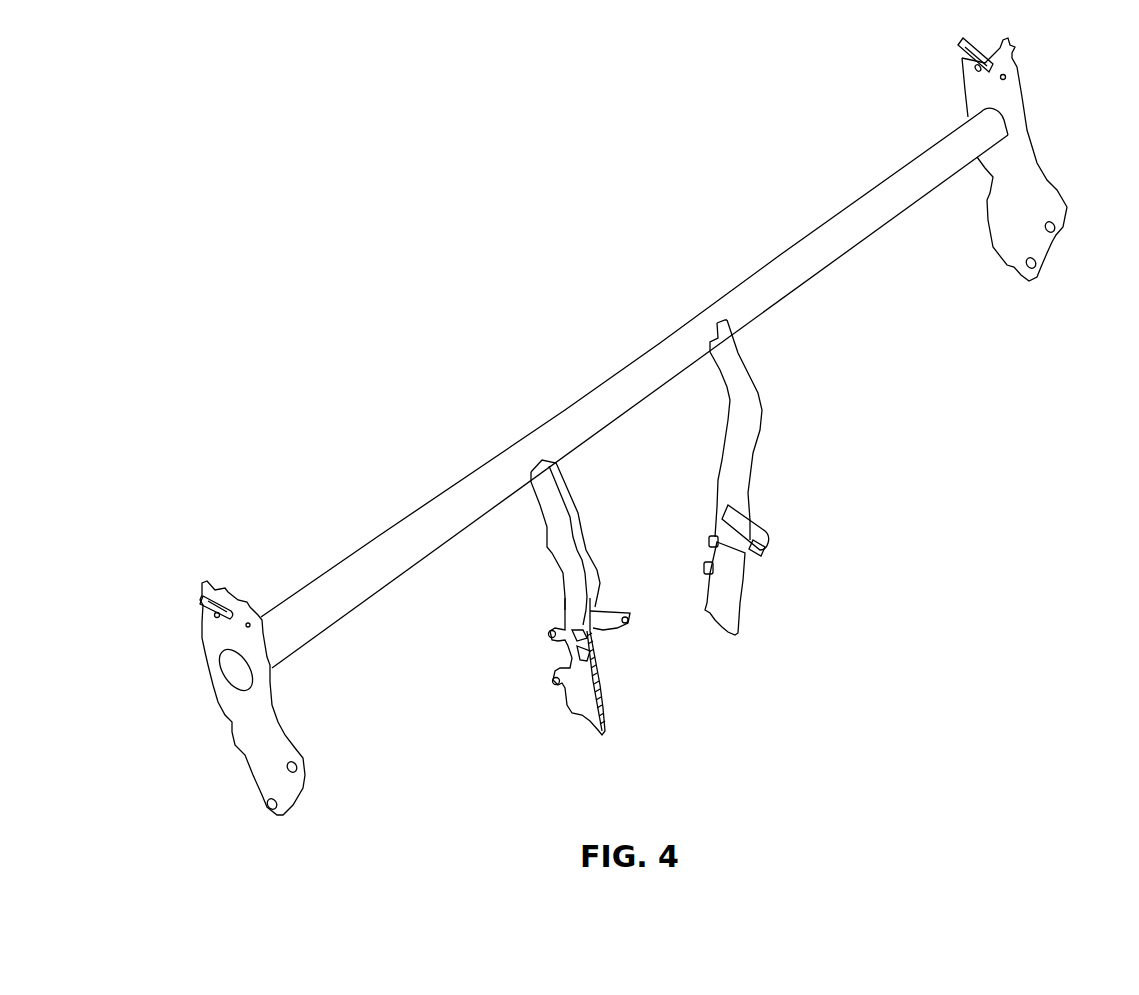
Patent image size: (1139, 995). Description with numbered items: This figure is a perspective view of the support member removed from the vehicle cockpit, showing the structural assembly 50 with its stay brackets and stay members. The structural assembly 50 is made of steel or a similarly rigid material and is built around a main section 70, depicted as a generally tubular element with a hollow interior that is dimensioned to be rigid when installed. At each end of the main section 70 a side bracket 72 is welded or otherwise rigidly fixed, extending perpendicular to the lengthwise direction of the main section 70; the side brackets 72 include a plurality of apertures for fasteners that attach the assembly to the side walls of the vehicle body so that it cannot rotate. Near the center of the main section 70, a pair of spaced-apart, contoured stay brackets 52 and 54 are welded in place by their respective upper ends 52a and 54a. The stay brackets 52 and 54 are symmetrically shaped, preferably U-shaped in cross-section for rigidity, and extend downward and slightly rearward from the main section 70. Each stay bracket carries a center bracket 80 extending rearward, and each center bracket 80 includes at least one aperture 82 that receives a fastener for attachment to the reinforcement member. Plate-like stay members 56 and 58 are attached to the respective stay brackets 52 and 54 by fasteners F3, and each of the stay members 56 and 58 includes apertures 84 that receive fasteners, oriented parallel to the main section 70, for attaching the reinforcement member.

The structural assembly 50 is at (621, 330).
The stay bracket 52 is at (552, 509).
The upper end 52a is at (540, 459).
The stay bracket 54 is at (732, 407).
The upper end 54a is at (723, 323).
The stay member 56 is at (608, 693).
The stay member 58 is at (745, 577).
The main section 70 is at (768, 269).
The side bracket 72 is at (279, 724).
The center bracket 80 is at (630, 626).
The aperture 82 is at (627, 620).
The aperture 84 is at (553, 683).
The fastener F3 is at (584, 633).